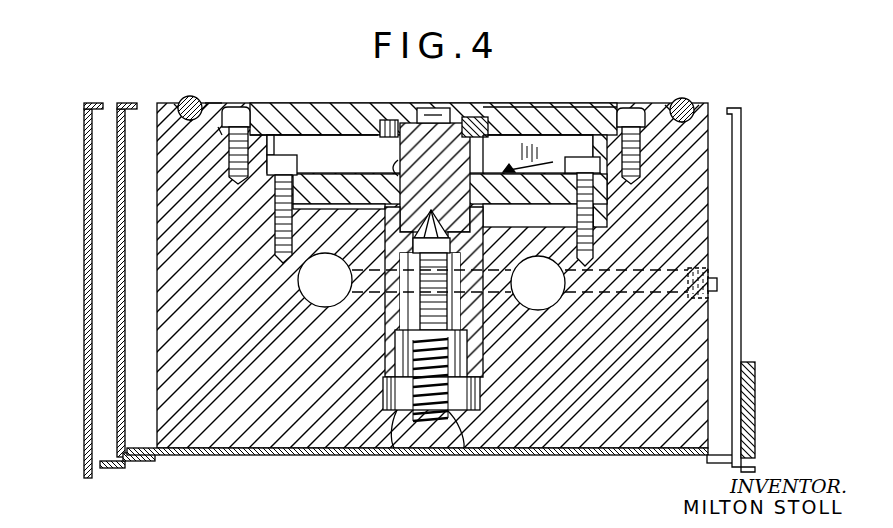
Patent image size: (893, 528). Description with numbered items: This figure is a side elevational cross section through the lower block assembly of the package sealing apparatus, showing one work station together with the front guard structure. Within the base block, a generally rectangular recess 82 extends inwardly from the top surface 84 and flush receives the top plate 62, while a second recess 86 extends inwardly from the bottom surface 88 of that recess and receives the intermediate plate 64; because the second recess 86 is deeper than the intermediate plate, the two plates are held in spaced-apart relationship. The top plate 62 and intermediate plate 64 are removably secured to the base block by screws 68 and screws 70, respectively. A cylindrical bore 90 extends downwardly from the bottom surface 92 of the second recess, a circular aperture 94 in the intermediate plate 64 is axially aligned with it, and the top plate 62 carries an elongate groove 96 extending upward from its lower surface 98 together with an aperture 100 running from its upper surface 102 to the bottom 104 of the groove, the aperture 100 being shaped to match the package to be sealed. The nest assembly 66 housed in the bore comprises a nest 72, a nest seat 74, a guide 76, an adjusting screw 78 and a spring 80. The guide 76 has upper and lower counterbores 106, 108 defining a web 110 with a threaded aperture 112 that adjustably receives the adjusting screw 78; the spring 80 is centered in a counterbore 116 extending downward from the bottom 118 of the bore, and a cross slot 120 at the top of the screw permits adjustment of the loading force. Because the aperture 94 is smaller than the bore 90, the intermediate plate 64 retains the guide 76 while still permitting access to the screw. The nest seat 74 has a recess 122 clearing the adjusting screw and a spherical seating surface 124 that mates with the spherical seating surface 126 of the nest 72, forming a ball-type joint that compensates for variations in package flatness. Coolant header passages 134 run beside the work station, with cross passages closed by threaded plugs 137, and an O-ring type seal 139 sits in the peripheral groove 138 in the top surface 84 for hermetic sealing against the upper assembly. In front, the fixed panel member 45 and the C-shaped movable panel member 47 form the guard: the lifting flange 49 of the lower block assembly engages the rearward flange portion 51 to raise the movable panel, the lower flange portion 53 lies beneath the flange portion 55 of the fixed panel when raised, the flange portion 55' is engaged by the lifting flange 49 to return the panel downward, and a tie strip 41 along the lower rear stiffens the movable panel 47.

The tie strip 41 is at (757, 415).
The fixed panel member 45 is at (85, 258).
The movable panel member 47 is at (118, 275).
The lifting flange 49 is at (282, 456).
The flange portion 51 is at (138, 104).
The flange portion 53 is at (117, 469).
The flange portion 55 is at (85, 90).
The flange portion 55' is at (155, 475).
The top plate 62 is at (298, 104).
The intermediate plate 64 is at (557, 176).
The nest assembly 66 is at (570, 174).
The screw 68 is at (250, 107).
The screw 70 is at (297, 168).
The nest 72 is at (450, 108).
The nest seat 74 is at (423, 177).
The guide 76 is at (478, 368).
The adjusting screw 78 is at (410, 236).
The spring 80 is at (460, 448).
The recess 82 is at (231, 106).
The top surface 84 is at (213, 104).
The second recess 86 is at (276, 146).
The bottom surface 88 is at (220, 131).
The bore 90 is at (390, 449).
The bottom surface 92 is at (352, 208).
The aperture 94 is at (396, 175).
The groove 96 is at (388, 119).
The lower surface 98 is at (348, 136).
The aperture 100 is at (504, 154).
The upper surface 102 is at (528, 108).
The bottom of the recess 104 is at (423, 108).
The counterbore 106 is at (462, 266).
The counterbore 108 is at (462, 345).
The web 110 is at (398, 312).
The threaded aperture 112 is at (413, 330).
The counterbore 116 is at (445, 412).
The bottom 118 is at (400, 412).
The cross slot 120 is at (480, 232).
The recess 122 is at (432, 214).
The seating surface 124 is at (513, 165).
The seating surface 126 is at (488, 112).
The header passage 134 is at (345, 292).
The threaded plug 137 is at (718, 282).
The groove 138 is at (218, 130).
The O-ring type seal 139 is at (195, 87).